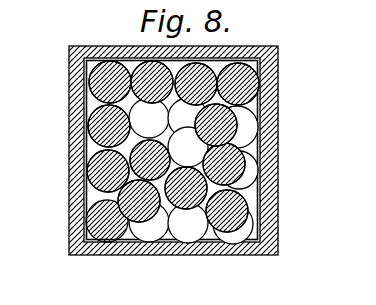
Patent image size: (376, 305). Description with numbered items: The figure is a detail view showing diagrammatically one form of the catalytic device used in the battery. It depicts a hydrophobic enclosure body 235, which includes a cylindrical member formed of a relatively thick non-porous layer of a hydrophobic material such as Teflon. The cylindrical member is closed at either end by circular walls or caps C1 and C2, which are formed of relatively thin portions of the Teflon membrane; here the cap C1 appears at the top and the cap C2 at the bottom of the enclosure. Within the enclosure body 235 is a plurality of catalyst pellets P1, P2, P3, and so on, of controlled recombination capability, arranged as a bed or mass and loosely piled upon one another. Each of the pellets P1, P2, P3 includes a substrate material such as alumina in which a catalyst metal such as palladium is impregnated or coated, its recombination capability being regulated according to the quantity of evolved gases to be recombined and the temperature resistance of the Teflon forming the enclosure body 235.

The catalyst pellet P1 is at (98, 80).
The catalyst pellet P2 is at (100, 127).
The catalyst pellet P3 is at (100, 222).
The circular wall or cap C1 is at (248, 48).
The circular wall or cap C2 is at (243, 257).
The hydrophobic enclosure body 235 is at (276, 156).